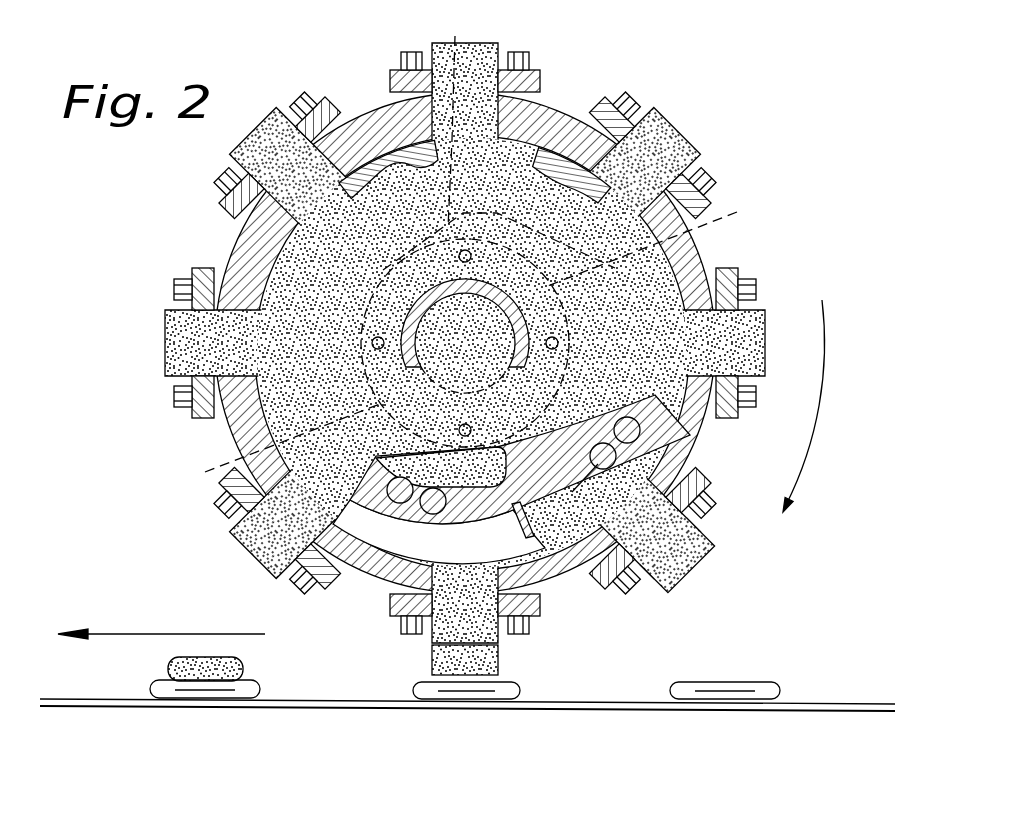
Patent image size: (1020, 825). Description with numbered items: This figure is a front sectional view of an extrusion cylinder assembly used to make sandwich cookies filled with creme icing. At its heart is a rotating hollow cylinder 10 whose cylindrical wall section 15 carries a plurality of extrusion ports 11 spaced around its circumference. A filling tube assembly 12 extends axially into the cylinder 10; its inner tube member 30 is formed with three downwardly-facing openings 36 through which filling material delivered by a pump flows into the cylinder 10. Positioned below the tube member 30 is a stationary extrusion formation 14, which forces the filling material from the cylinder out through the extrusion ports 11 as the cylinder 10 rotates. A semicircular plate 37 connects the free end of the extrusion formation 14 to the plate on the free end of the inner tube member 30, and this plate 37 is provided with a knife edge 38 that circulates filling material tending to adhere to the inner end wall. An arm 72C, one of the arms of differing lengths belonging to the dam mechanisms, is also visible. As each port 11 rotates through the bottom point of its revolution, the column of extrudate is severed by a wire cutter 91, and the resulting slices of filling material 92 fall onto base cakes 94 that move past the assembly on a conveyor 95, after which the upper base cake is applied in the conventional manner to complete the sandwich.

The hollow cylinder 10 is at (441, 327).
The extrusion ports 11 is at (712, 165).
The filling tube assembly 12 is at (535, 322).
The extrusion formation 14 is at (292, 538).
The cylindrical wall section 15 is at (365, 92).
The inner tube member 30 is at (405, 347).
The downwardly-facing openings 36 is at (278, 445).
The semicircular plate 37 is at (499, 136).
The knife edge 38 is at (652, 240).
The arm 72C is at (580, 527).
The wire cutter 91 is at (467, 648).
The slices of filling material 92 is at (243, 667).
The base cakes 94 is at (213, 688).
The conveyor 95 is at (555, 708).